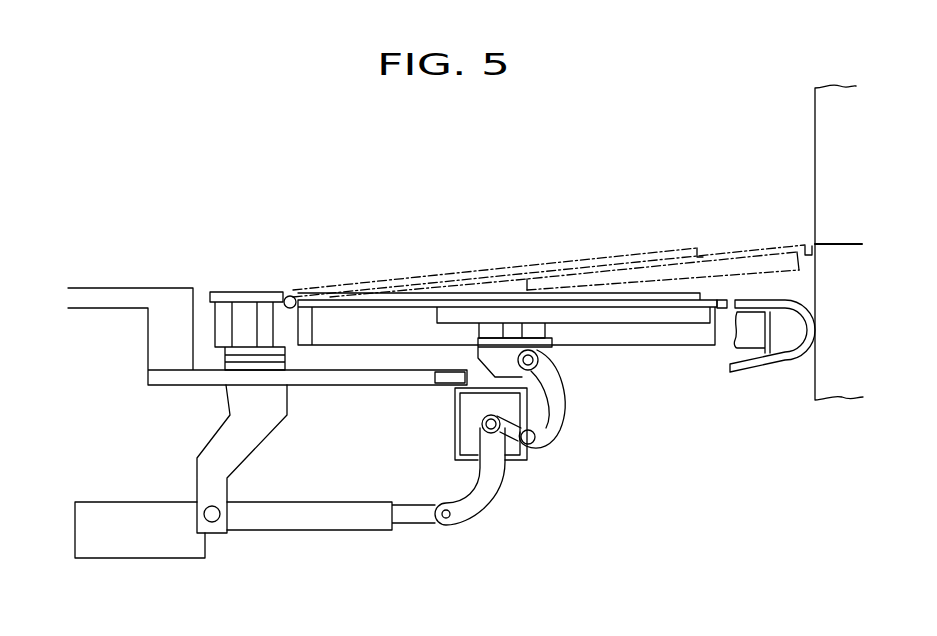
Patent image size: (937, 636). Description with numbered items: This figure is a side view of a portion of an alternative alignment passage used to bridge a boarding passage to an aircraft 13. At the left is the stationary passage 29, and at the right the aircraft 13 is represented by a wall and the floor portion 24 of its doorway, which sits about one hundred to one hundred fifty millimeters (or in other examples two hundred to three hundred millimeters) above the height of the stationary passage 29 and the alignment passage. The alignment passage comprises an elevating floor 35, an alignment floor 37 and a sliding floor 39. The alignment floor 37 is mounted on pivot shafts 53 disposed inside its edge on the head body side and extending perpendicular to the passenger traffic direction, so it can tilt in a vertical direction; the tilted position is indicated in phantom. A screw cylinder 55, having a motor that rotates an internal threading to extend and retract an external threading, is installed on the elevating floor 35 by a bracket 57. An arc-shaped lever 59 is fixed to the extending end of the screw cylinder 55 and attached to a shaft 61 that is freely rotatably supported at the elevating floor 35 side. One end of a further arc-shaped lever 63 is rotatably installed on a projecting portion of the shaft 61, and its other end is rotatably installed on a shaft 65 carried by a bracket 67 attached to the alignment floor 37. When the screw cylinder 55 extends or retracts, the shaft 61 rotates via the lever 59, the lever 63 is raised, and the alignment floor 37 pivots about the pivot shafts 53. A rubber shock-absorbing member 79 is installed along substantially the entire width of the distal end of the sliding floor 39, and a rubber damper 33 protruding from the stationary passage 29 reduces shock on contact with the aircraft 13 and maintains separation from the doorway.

The aircraft 13 is at (815, 125).
The floor portion 24 is at (847, 243).
The stationary passage 29 is at (131, 288).
The rubber damper 33 is at (777, 364).
The elevating floor 35 is at (245, 292).
The alignment floor 37 is at (373, 293).
The sliding floor 39 is at (723, 258).
The pivot shafts 53 is at (290, 296).
The screw cylinder 55 is at (305, 533).
The bracket 57 is at (217, 436).
The arc-shaped lever 59 is at (484, 500).
The shaft 61 is at (482, 424).
The arc-shaped lever 63 is at (553, 420).
The shaft 65 is at (537, 366).
The bracket 67 is at (552, 353).
The rubber shock-absorbing member 79 is at (723, 300).